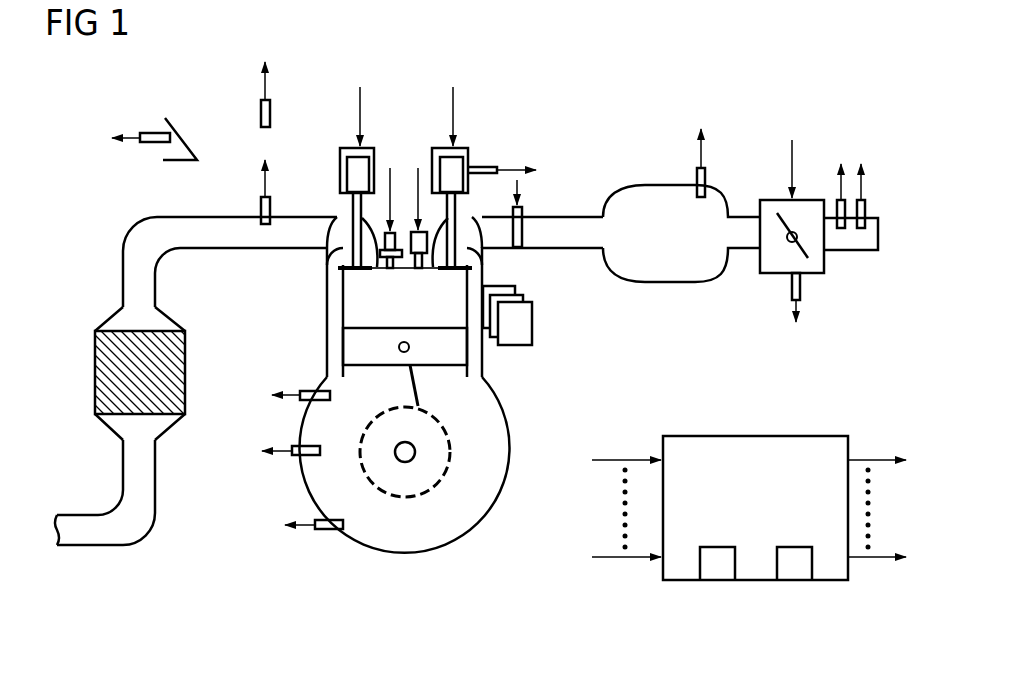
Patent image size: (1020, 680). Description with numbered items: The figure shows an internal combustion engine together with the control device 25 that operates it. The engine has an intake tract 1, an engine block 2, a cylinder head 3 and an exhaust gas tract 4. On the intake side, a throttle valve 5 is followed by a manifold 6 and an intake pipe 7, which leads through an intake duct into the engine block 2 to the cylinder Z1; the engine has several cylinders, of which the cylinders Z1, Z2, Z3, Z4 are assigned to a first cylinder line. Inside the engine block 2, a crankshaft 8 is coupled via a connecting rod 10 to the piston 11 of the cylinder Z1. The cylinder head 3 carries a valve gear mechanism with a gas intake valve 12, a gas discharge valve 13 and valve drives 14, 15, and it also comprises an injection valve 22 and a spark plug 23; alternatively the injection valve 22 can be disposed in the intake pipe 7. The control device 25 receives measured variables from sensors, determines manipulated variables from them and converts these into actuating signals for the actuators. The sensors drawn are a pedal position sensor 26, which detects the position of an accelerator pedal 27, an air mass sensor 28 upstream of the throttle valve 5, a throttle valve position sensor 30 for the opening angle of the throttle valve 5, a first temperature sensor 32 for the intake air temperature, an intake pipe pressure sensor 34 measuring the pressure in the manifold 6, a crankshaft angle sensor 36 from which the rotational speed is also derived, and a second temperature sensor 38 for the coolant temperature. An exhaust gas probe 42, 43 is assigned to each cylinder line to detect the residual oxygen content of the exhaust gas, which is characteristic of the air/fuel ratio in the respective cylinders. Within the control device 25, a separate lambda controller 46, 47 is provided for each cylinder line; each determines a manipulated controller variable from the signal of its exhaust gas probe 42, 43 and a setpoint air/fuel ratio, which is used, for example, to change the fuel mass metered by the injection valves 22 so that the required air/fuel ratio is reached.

The intake tract 1 is at (704, 300).
The engine block 2 is at (302, 306).
The cylinder head 3 is at (394, 185).
The exhaust gas tract 4 is at (126, 232).
The throttle valve 5 is at (772, 208).
The manifold 6 is at (712, 268).
The intake pipe 7 is at (583, 222).
The crankshaft 8 is at (415, 452).
The connecting rod 10 is at (408, 390).
The piston 11 is at (438, 360).
The gas intake valve 12 is at (448, 270).
The gas discharge valve 13 is at (330, 268).
The valve drive 14 is at (446, 160).
The valve drive 15 is at (347, 163).
The injection valve 22 is at (418, 270).
The spark plug 23 is at (390, 270).
The control device 25 is at (749, 512).
The pedal position sensor 26 is at (152, 133).
The accelerator pedal 27 is at (183, 140).
The air mass sensor 28 is at (838, 203).
The throttle valve position sensor 30 is at (801, 285).
The first temperature sensor 32 is at (866, 210).
The intake pipe pressure sensor 34 is at (697, 180).
The crankshaft angle sensor 36 is at (298, 457).
The second temperature sensor 38 is at (305, 391).
The exhaust gas probe 42 is at (261, 212).
The exhaust gas probe 43 is at (271, 110).
The lambda controller 46 is at (720, 583).
The lambda controller 47 is at (795, 583).
The cylinder Z1 is at (483, 350).
The cylinder Z2 is at (522, 325).
The cylinder Z3 is at (524, 297).
The cylinder Z4 is at (512, 288).